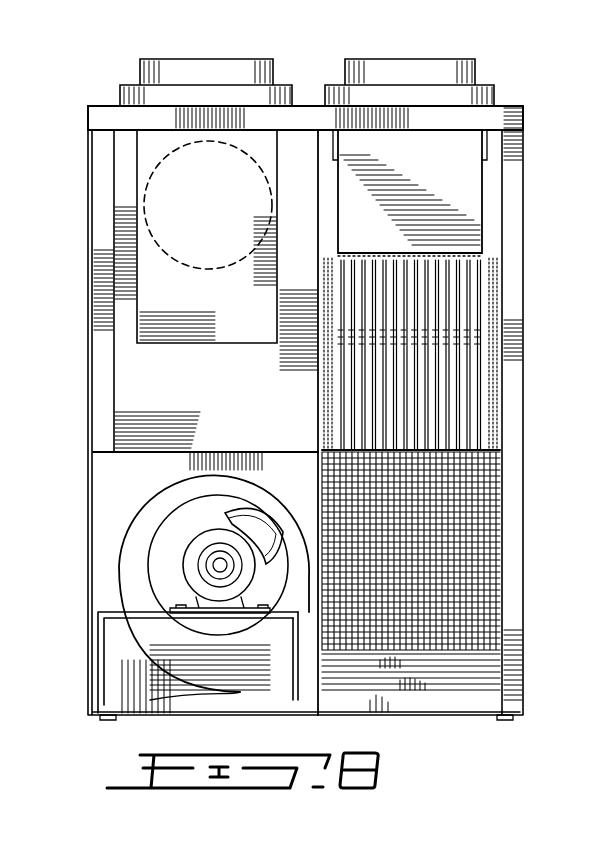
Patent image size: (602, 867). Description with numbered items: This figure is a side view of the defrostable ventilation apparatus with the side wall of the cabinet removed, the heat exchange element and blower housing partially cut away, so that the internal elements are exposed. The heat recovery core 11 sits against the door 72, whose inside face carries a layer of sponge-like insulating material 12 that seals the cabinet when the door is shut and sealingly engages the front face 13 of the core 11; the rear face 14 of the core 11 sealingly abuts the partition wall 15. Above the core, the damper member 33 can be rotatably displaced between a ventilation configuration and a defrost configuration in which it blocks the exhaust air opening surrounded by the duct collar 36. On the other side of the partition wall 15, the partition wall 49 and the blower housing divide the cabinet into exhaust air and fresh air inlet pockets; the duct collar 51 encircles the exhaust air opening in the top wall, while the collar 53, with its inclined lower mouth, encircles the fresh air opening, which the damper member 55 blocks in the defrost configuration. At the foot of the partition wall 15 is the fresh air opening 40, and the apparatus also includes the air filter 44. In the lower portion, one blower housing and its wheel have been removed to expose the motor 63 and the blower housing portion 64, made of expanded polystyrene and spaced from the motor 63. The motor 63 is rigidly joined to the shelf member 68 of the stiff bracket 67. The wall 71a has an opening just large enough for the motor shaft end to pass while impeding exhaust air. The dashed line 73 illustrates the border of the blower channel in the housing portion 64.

The heat recovery core 11 is at (470, 400).
The insulating material 12 is at (503, 162).
The front face of the core 13 is at (500, 350).
The rear face of the core 14 is at (322, 348).
The partition wall 15 is at (318, 390).
The damper member 33 is at (468, 212).
The duct collar 36 is at (372, 62).
The fresh air opening 40 is at (313, 643).
The air filter 44 is at (490, 527).
The partition wall 49 is at (118, 393).
The duct collar 51 is at (141, 65).
The collar 53 is at (165, 178).
The damper member 55 is at (150, 292).
The motor 63 is at (192, 566).
The blower housing portion 64 is at (118, 482).
The stiff bracket 67 is at (293, 662).
The shelf member 68 is at (126, 615).
The wall 71a is at (175, 537).
The door 72 is at (523, 642).
The dashed line 73 is at (178, 677).